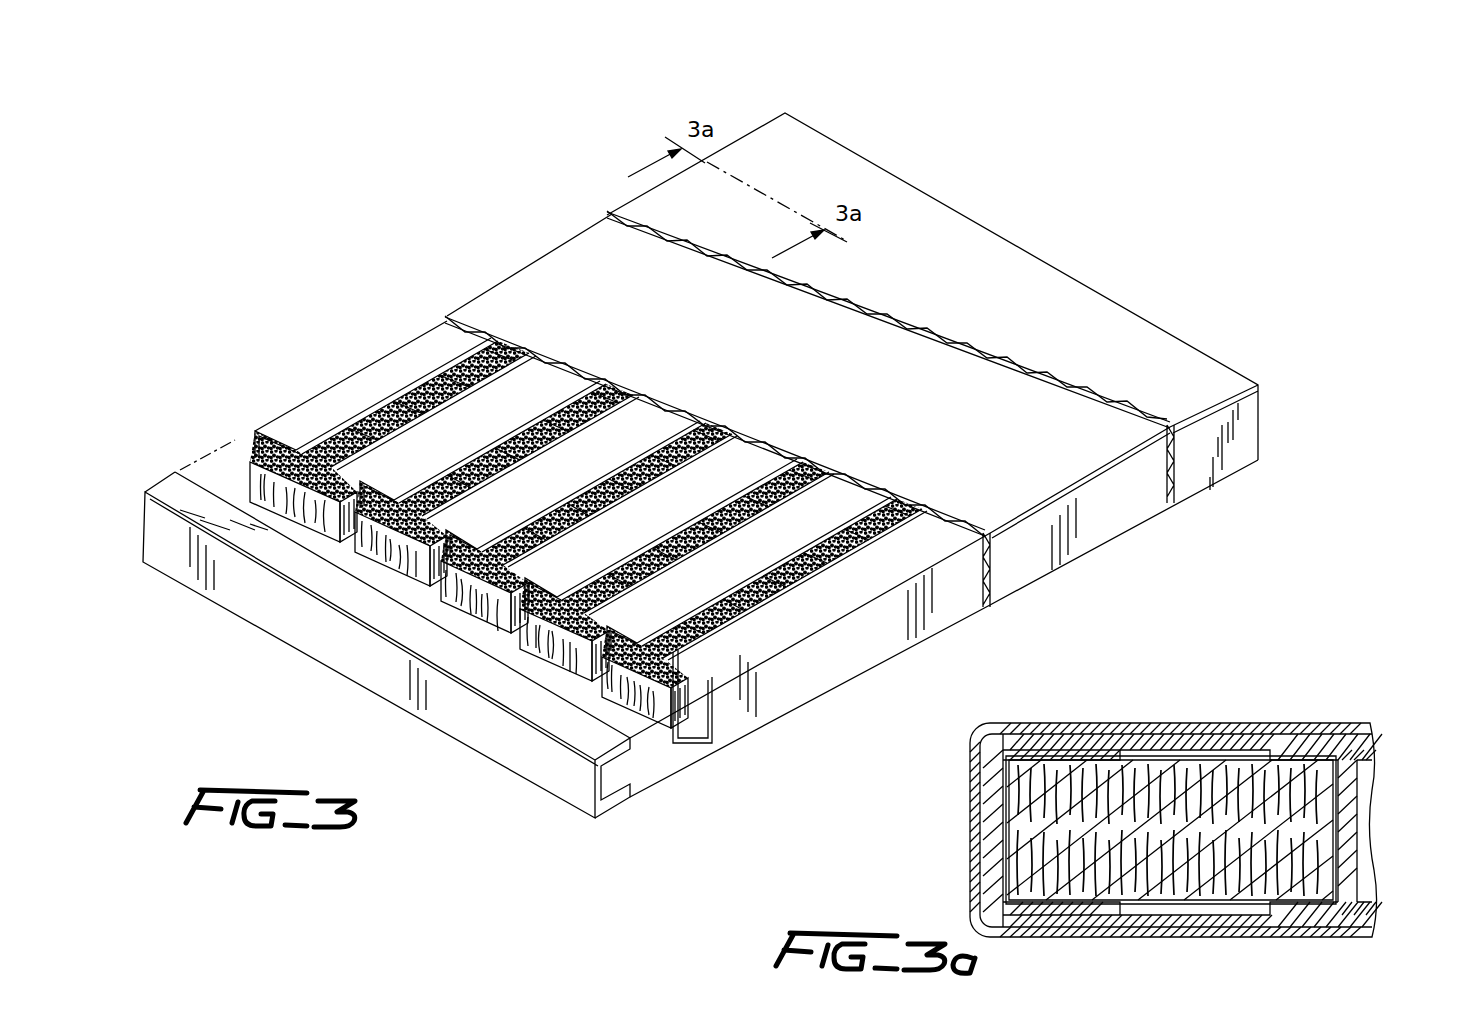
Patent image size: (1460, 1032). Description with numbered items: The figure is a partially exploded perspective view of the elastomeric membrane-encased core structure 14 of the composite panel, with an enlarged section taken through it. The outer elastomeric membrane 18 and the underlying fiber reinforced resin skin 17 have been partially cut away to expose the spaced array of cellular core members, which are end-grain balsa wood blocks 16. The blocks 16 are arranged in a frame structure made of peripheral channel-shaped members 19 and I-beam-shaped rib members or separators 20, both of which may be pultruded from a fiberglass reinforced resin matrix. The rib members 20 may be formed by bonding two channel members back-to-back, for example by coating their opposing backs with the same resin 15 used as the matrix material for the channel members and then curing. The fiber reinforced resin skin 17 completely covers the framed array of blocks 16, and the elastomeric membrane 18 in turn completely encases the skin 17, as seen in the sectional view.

In FIG. 3, the core structure 14 is at (1084, 579).
In FIG. 3, the resin 15 is at (687, 743).
In FIG. 3A, the resin 15 is at (995, 858).
In FIG. 3, the balsa wood blocks 16 is at (262, 445).
In FIG. 3A, the balsa wood blocks 16 is at (1300, 812).
In FIG. 3, the fiber reinforced resin skin 17 is at (1077, 470).
In FIG. 3A, the fiber reinforced resin skin 17 is at (1292, 737).
In FIG. 3, the elastomeric membrane 18 is at (1038, 288).
In FIG. 3A, the elastomeric membrane 18 is at (1360, 725).
In FIG. 3, the channel-shaped members 19 is at (365, 383).
In FIG. 3A, the channel-shaped members 19 is at (990, 795).
In FIG. 3, the I-beam-shaped rib members 20 is at (655, 422).
In FIG. 3A, the I-beam-shaped rib members 20 is at (1347, 872).